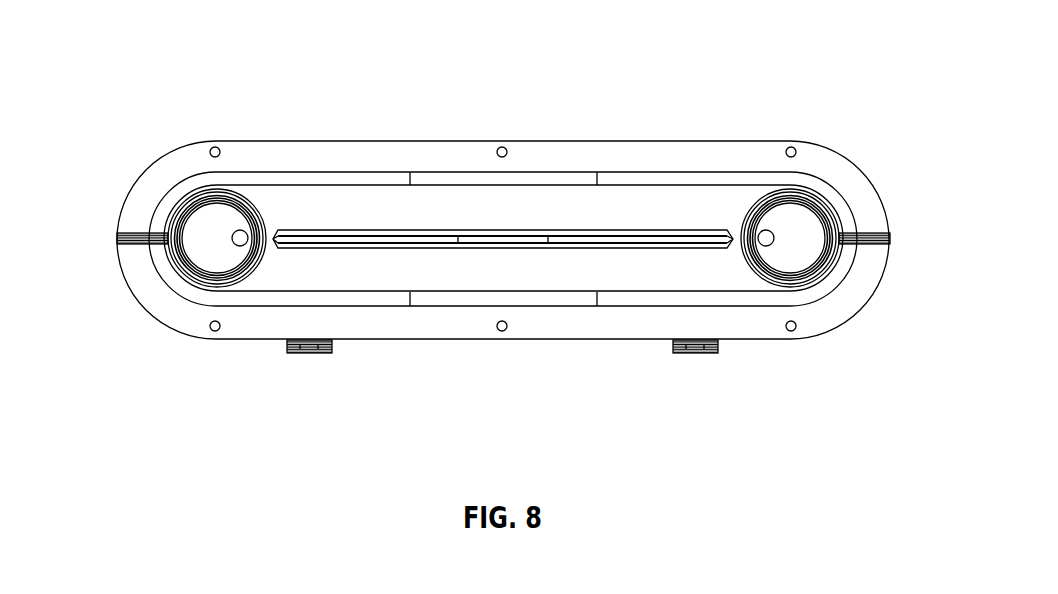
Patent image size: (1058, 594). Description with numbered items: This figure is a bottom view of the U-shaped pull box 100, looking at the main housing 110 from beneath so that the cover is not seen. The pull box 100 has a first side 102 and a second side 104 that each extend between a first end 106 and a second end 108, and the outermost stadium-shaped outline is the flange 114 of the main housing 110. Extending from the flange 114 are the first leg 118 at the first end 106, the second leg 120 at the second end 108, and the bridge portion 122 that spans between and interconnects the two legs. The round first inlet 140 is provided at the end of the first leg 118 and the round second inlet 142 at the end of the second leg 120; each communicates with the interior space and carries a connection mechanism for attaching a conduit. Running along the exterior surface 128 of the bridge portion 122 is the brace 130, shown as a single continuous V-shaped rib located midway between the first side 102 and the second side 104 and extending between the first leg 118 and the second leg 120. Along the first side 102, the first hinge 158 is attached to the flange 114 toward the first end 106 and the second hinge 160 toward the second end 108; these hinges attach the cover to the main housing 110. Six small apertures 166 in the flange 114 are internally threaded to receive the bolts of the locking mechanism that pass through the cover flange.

The pull box 100 is at (502, 244).
The first side 102 is at (615, 378).
The second side 104 is at (630, 112).
The first end 106 is at (95, 250).
The second end 108 is at (903, 237).
The main housing 110 is at (713, 178).
The flange 114 is at (303, 148).
The first leg 118 is at (195, 192).
The second leg 120 is at (827, 270).
The bridge portion 122 is at (470, 198).
The exterior surface 128 is at (478, 276).
The brace 130 is at (515, 234).
The first inlet 140 is at (200, 247).
The second inlet 142 is at (807, 223).
The first hinge 158 is at (307, 353).
The second hinge 160 is at (697, 353).
The apertures 166 is at (504, 231).